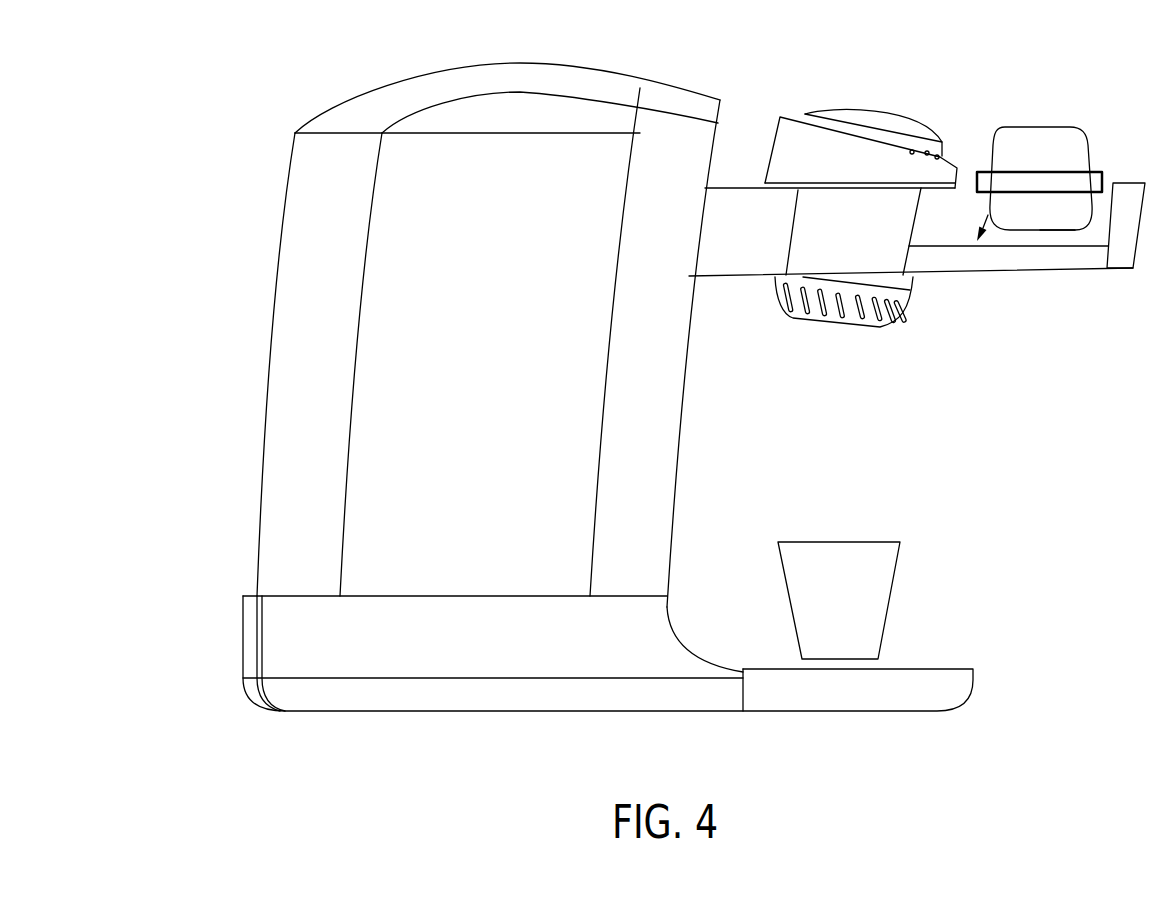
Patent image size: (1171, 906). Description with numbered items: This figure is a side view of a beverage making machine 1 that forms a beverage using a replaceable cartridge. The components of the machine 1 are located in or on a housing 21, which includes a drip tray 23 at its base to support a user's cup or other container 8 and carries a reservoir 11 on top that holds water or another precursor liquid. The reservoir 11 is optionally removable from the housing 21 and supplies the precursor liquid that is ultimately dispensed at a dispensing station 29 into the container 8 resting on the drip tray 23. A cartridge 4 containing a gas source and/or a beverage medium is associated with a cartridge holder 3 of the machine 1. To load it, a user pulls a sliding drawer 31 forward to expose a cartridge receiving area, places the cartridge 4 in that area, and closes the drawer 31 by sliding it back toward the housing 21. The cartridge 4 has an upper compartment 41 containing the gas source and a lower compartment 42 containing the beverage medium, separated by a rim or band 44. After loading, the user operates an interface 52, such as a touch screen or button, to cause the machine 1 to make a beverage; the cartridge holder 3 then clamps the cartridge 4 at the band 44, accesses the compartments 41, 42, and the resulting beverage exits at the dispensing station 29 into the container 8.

The beverage making machine 1 is at (246, 96).
The reservoir 11 is at (520, 75).
The interface 52 is at (678, 92).
The housing 21 is at (382, 438).
The drip tray 23 is at (900, 677).
The container 8 is at (887, 580).
The cartridge holder 3 is at (975, 115).
The dispensing station 29 is at (867, 330).
The sliding drawer 31 is at (983, 260).
The cartridge 4 is at (1043, 72).
The upper compartment 41 is at (1060, 137).
The lower compartment 42 is at (1058, 218).
The rim or band 44 is at (1098, 181).